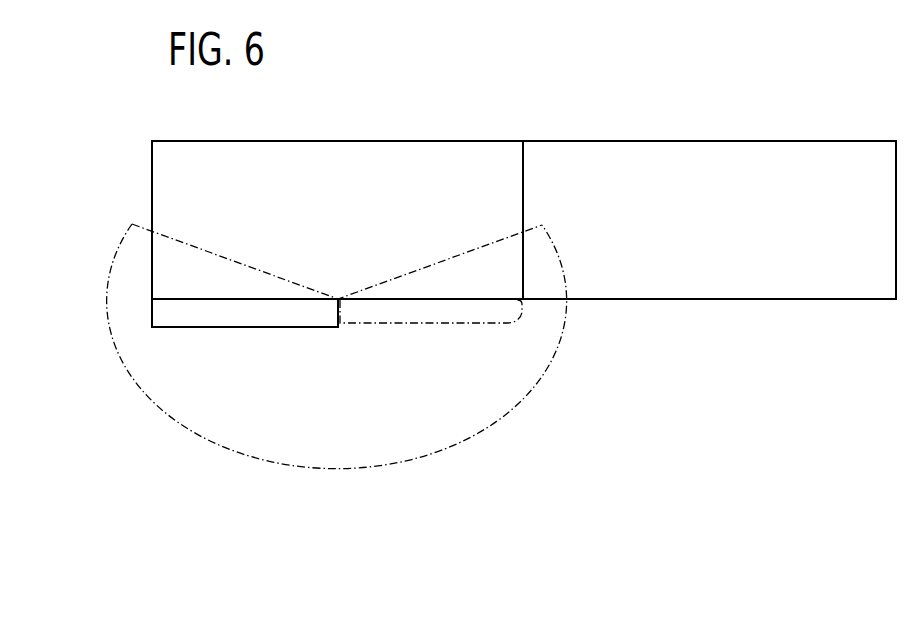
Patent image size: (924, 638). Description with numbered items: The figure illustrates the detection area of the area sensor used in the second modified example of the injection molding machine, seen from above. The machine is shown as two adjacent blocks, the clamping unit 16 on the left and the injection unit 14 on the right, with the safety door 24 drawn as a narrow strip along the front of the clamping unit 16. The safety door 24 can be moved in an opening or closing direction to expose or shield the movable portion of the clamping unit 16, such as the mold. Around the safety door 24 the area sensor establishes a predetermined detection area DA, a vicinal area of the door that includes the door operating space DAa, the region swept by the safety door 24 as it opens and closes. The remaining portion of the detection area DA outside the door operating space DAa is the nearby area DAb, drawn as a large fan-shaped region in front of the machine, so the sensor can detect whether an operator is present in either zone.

The injection unit 14 is at (694, 148).
The clamping unit 16 is at (347, 148).
The safety door 24 is at (291, 323).
The detection area DA is at (446, 449).
The door operating space DAa is at (446, 325).
The nearby area DAb is at (320, 453).